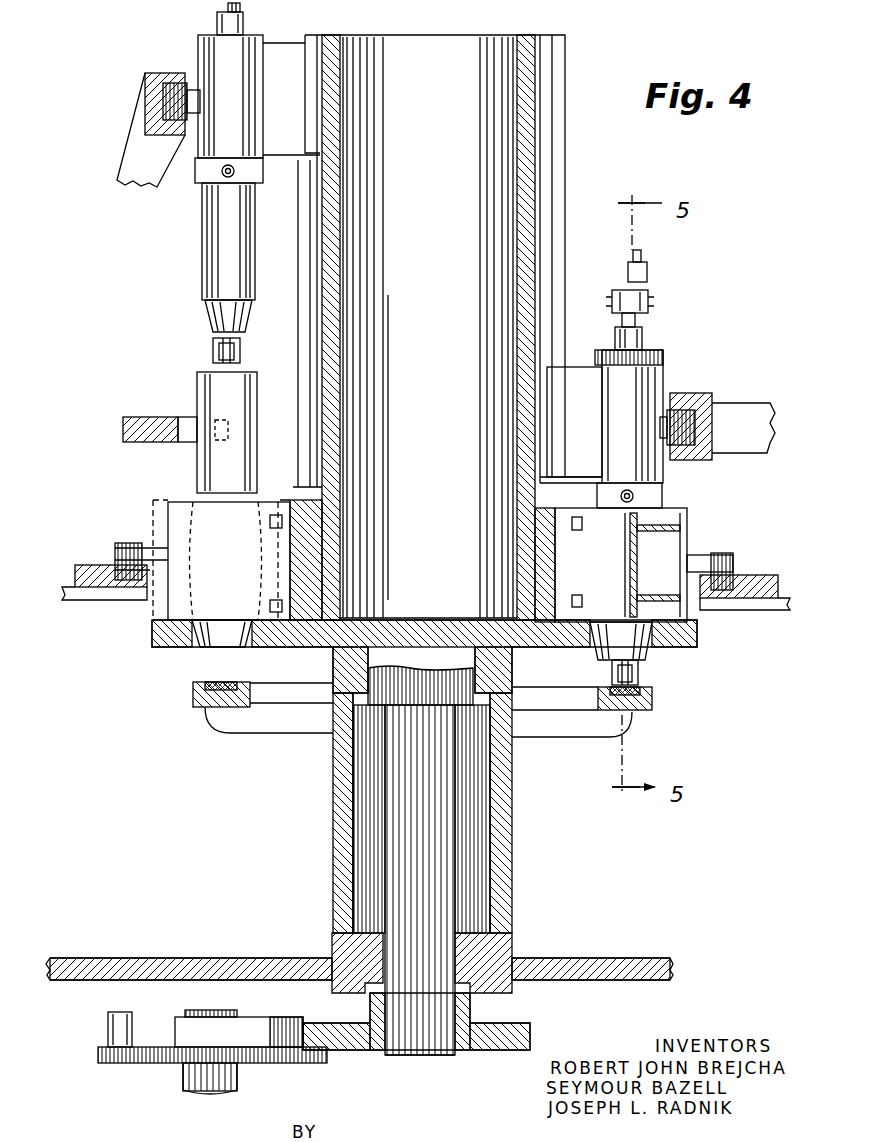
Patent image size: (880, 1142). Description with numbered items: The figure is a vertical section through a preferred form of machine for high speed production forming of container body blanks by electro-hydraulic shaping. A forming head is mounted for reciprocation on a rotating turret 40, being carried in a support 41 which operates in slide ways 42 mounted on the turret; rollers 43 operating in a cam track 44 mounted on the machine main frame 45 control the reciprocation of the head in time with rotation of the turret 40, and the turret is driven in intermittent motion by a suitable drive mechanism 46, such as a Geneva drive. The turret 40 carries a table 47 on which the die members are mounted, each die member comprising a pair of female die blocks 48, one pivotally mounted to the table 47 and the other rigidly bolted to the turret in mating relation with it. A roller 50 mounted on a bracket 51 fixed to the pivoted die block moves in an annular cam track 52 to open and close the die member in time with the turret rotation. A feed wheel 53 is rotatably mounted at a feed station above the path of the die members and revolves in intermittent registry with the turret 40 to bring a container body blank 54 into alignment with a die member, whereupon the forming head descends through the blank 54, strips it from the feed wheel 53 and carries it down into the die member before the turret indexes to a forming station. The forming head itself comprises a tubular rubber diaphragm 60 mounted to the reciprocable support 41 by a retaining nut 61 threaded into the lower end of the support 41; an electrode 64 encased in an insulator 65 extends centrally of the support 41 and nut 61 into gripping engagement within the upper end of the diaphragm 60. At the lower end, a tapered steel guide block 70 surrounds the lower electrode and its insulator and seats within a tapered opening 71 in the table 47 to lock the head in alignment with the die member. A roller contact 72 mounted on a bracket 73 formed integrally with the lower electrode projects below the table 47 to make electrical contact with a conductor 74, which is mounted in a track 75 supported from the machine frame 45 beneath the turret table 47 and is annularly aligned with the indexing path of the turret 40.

The rotating turret 40 is at (570, 174).
The support 41 is at (215, 52).
The slide ways 42 is at (306, 226).
The rollers 43 is at (180, 100).
The cam track 44 is at (155, 128).
The machine main frame 45 is at (596, 968).
The drive mechanism 46 is at (332, 1066).
The table 47 is at (178, 645).
The female die blocks 48 is at (240, 515).
The roller 50 is at (127, 568).
The bracket 51 is at (700, 556).
The annular cam track 52 is at (82, 578).
The feed wheel 53 is at (140, 417).
The container body blank 54 is at (208, 384).
The tubular rubber diaphragm 60 is at (212, 277).
The retaining nut 61 is at (205, 176).
The electrode 64 is at (228, 8).
The insulator 65 is at (232, 22).
The tapered steel guide block 70 is at (207, 318).
The tapered opening 71 is at (208, 665).
The roller contact 72 is at (215, 352).
The bracket 73 is at (645, 670).
The conductor 74 is at (225, 685).
The track 75 is at (198, 702).